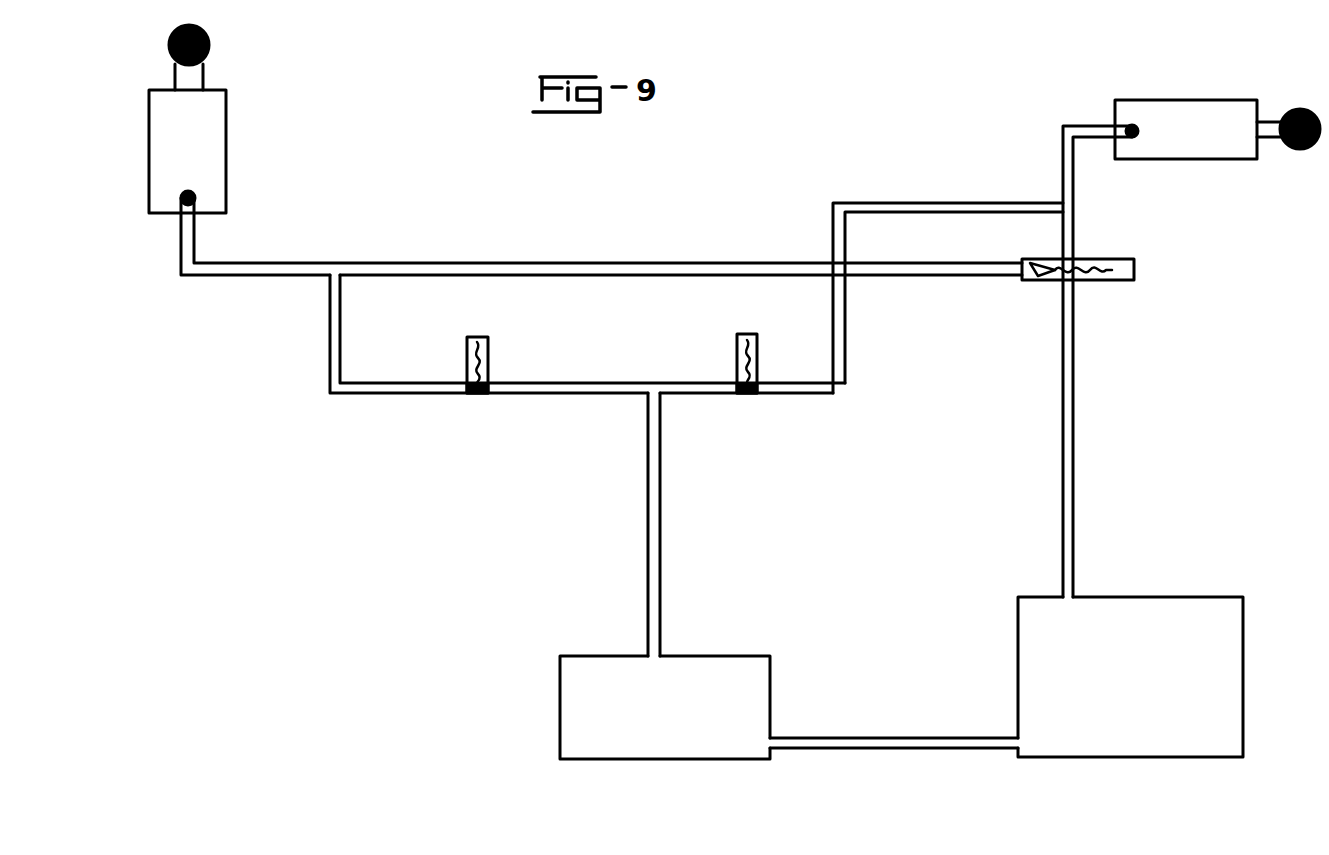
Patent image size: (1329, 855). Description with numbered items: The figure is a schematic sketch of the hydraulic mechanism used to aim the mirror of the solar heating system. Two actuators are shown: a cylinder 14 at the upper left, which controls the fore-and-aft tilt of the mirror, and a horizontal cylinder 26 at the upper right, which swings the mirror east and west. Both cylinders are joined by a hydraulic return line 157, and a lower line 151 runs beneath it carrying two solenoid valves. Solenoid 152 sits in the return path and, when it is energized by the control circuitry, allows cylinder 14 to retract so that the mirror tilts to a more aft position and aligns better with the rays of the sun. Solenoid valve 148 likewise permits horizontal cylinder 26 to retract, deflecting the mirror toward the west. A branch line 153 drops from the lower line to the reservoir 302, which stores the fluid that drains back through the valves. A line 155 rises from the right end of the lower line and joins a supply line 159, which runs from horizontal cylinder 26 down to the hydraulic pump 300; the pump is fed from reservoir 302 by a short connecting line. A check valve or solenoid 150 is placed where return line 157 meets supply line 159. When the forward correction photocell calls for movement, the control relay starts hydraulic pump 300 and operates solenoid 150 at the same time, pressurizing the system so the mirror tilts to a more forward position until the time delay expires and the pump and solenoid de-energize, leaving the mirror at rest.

The cylinder 14 is at (214, 160).
The horizontal cylinder 26 is at (1224, 100).
The solenoid valve 148 is at (758, 355).
The solenoid 150 is at (1118, 259).
The hydraulic line 151 is at (536, 384).
The solenoid 152 is at (500, 318).
The return line to reservoir 153 is at (658, 542).
The hydraulic line 155 is at (880, 203).
The hydraulic return line 157 is at (584, 264).
The pump supply line 159 is at (1075, 412).
The hydraulic pump 300 is at (1243, 655).
The reservoir 302 is at (770, 702).